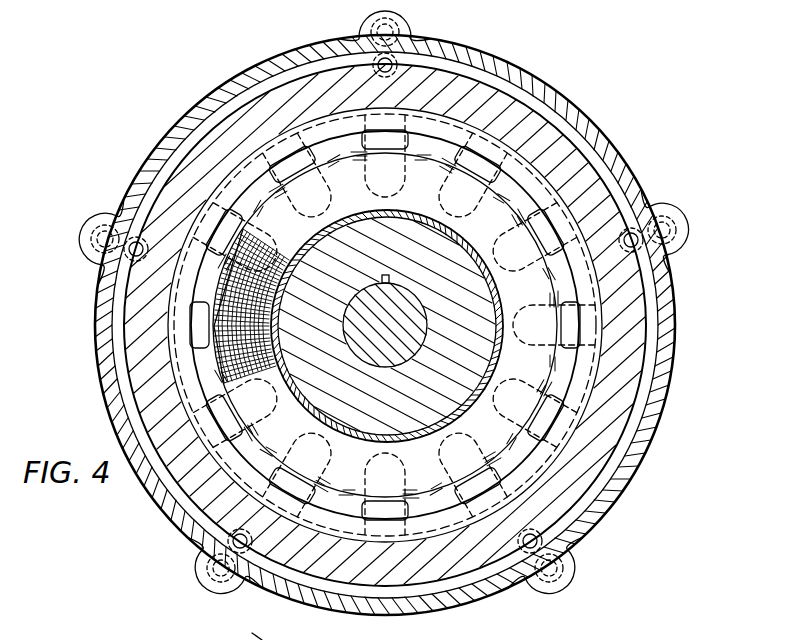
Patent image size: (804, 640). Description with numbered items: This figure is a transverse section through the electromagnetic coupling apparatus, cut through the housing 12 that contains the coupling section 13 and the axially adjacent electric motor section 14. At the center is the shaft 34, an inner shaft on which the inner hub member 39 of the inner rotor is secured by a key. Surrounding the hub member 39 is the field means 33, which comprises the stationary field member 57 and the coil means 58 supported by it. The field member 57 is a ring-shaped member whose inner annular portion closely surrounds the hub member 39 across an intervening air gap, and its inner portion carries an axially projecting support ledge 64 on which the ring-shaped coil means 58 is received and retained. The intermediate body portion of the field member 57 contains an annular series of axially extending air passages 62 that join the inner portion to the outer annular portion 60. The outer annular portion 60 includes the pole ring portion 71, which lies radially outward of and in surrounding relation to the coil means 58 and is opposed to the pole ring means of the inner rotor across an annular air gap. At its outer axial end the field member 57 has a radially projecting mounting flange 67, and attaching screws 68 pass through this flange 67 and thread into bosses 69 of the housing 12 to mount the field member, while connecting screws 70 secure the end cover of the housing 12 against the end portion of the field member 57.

The housing 12 is at (509, 63).
The coupling section 13 is at (580, 116).
The electric motor section 14 is at (538, 90).
The field means 33 is at (598, 170).
The shaft 34 is at (412, 306).
The inner hub member 39 is at (332, 397).
The field member 57 is at (498, 312).
The coil means 58 is at (310, 263).
The outer annular portion 60 is at (648, 335).
The air passages 62 is at (512, 333).
The support ledge 64 is at (500, 380).
The mounting flange 67 is at (242, 632).
The attaching screws 68 is at (672, 222).
The bosses 69 is at (690, 236).
The connecting screws 70 is at (636, 230).
The pole ring portion 71 is at (633, 293).